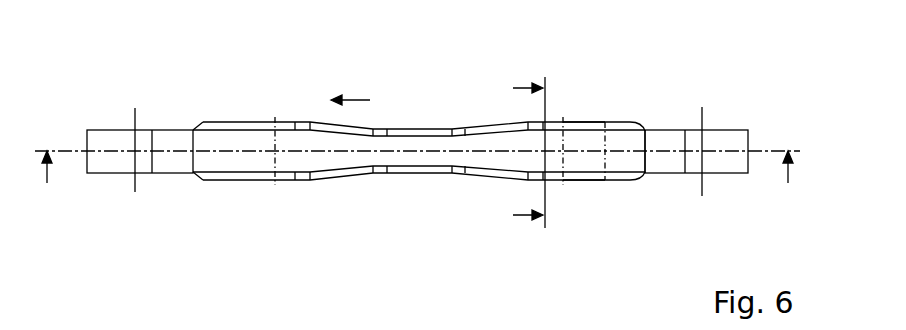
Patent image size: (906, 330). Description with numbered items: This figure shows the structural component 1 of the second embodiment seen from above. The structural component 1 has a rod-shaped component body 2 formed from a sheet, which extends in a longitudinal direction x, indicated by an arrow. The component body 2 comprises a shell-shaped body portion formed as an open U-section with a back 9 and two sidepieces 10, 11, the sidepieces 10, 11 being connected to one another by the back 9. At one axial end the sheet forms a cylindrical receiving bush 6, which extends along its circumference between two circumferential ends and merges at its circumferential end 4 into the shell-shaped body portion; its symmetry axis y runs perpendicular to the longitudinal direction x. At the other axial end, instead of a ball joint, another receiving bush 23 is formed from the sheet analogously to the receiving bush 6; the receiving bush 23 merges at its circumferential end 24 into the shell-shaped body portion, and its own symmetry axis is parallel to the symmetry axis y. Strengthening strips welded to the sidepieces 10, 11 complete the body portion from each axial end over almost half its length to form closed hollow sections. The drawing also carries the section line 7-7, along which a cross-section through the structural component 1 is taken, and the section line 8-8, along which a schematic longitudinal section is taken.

The structural component 1 is at (252, 98).
The component body 2 is at (135, 190).
The circumferential end 4 is at (645, 131).
The receiving bush 6 is at (718, 140).
The section line 7- 7 is at (525, 153).
The section line 8- 8 is at (415, 179).
The back 9 is at (604, 142).
The sidepiece 10 is at (590, 123).
The sidepiece 11 is at (598, 176).
The receiving bush 23 is at (100, 162).
The circumferential end 24 is at (193, 128).
The longitudinal direction x is at (353, 100).
The symmetry axis y is at (700, 180).